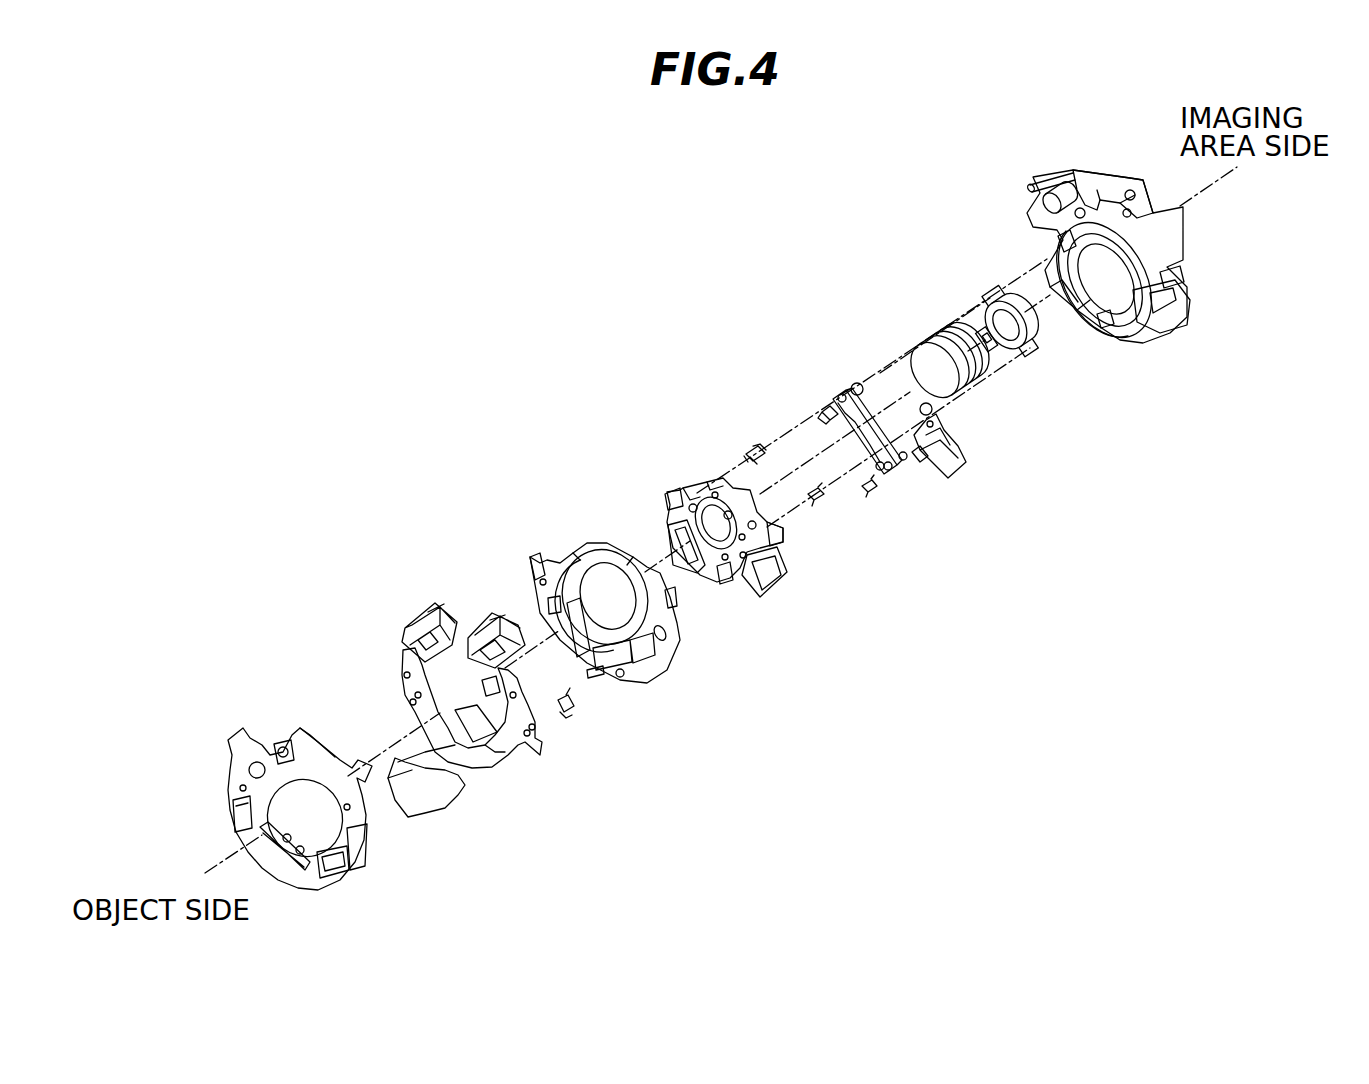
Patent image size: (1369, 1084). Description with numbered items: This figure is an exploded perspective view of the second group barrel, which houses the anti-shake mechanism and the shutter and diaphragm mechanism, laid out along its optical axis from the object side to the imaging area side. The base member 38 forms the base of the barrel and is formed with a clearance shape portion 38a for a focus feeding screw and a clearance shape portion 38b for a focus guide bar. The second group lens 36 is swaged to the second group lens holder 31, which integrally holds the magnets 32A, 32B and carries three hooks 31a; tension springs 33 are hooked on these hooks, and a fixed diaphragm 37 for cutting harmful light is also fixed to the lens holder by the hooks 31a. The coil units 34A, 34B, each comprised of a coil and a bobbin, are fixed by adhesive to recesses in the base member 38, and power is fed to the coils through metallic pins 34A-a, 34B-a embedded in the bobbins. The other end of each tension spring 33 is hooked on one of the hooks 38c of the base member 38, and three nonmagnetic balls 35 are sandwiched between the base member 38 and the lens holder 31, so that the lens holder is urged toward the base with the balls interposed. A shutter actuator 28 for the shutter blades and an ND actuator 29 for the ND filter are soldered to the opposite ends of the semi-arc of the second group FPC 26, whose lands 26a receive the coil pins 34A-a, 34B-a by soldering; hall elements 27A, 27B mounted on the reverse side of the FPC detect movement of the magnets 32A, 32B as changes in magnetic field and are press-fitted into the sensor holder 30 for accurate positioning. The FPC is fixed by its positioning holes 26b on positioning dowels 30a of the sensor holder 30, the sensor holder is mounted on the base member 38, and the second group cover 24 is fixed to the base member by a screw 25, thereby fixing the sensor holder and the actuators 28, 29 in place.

The second group cover 24 is at (302, 888).
The screw 25 is at (240, 738).
The second group FPC 26 is at (456, 765).
The lands 26a is at (410, 700).
The positioning holes 26b is at (404, 668).
The hall element 27A is at (495, 755).
The hall element 27B is at (574, 708).
The shutter actuator 28 is at (420, 612).
The ND actuator 29 is at (493, 618).
The sensor holder 30 is at (655, 682).
The positioning dowels 30a is at (540, 556).
The second group lens holder 31 is at (718, 488).
The hooks 31a is at (668, 495).
The magnet 32A is at (680, 545).
The magnet 32B is at (778, 590).
The tension springs 33 is at (753, 445).
The coil unit 34A is at (882, 476).
The metallic pin 34A-a is at (826, 410).
The coil unit 34B is at (944, 480).
The metallic pin 34B-a is at (950, 468).
The nonmagnetic balls 35 is at (860, 382).
The second group lens 36 is at (936, 350).
The fixed diaphragm 37 is at (1022, 342).
The base member 38 is at (1165, 322).
The clearance shape portion 38a is at (1082, 188).
The clearance shape portion 38b is at (1060, 178).
The hooks 38c is at (1058, 240).